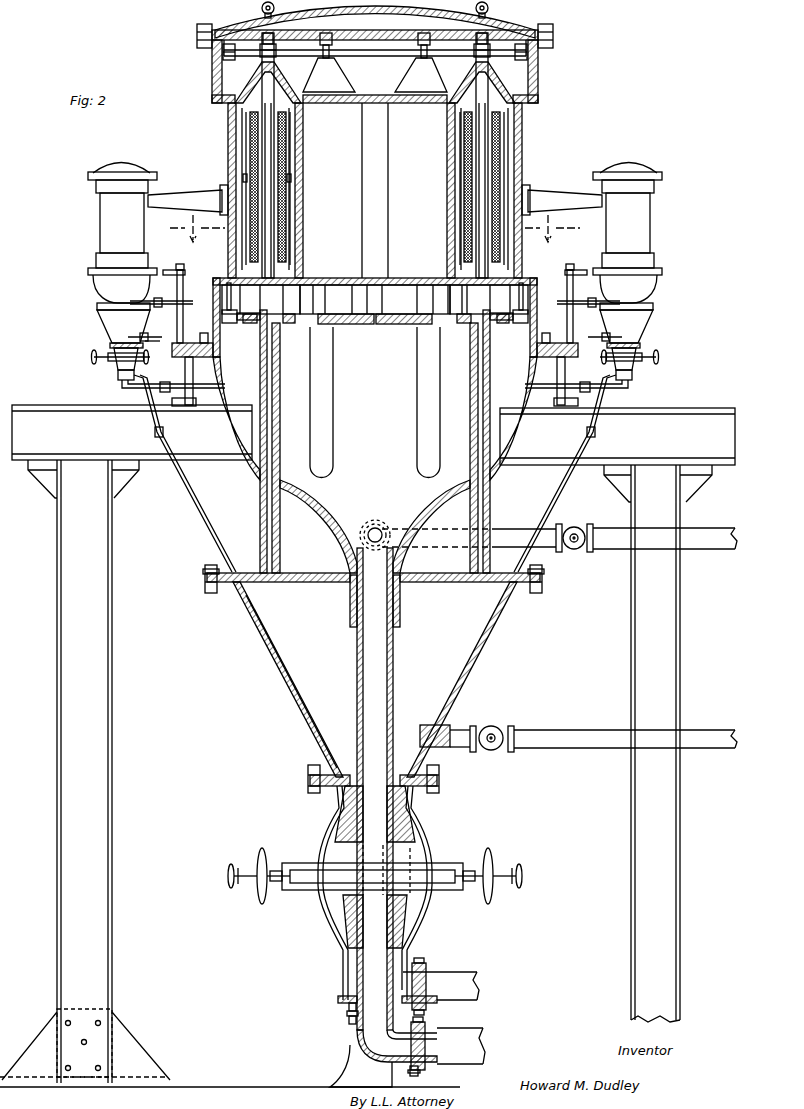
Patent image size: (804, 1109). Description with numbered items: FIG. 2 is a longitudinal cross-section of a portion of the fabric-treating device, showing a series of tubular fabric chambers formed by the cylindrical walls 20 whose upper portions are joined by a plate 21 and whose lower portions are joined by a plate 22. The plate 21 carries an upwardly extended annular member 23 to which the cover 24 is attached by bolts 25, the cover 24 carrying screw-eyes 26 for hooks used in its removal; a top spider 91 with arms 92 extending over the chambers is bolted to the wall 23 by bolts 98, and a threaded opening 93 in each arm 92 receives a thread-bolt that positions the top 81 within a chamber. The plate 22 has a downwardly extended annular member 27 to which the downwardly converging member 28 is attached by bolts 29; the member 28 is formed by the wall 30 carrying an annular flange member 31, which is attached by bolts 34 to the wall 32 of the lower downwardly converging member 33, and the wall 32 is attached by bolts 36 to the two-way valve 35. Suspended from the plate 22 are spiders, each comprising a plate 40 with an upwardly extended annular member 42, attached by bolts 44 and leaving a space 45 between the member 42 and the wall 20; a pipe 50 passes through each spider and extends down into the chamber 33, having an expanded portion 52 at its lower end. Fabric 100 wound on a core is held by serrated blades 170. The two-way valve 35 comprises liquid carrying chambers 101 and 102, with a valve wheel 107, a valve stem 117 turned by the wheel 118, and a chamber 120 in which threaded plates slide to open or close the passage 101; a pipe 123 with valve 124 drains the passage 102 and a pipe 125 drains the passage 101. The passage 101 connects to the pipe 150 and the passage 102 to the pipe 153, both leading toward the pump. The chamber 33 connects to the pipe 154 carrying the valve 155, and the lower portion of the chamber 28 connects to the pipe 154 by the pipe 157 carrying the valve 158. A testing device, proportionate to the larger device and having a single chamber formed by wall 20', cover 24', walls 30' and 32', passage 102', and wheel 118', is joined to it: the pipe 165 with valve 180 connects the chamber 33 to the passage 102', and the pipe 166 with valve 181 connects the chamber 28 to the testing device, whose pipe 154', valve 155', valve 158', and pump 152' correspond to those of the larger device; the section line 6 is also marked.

The cylindrical wall 20 is at (380, 155).
The cylindrical wall of testing device 20' is at (381, 227).
The plate 21 is at (372, 95).
The plate 22 is at (375, 278).
The annular member 23 is at (212, 78).
The cover 24 is at (375, 19).
The cover of testing device 24' is at (375, 157).
The bolt 25 is at (385, 26).
The screw-eye 26 is at (389, 9).
The annular member 27 is at (213, 300).
The downwardly converging member 28 is at (243, 412).
The bolt 29 is at (548, 332).
The wall 30 is at (377, 441).
The wall of testing device 30' is at (390, 292).
The annular flange member 31 is at (232, 573).
The wall 32 is at (377, 679).
The wall of testing device 32' is at (389, 329).
The downwardly converging member 33 is at (295, 684).
The bolt 34 is at (210, 594).
The two-way valve 35 is at (420, 825).
The bolt 36 is at (312, 793).
The plate 40 is at (285, 323).
The annular member 42 is at (233, 323).
The bolt 44 is at (320, 278).
The space 45 is at (242, 166).
The pipe 50 is at (272, 390).
The expanded portion 52 is at (290, 570).
The section line 6 is at (375, 237).
The top 81 is at (250, 85).
The top spider 91 is at (370, 50).
The arm 92 is at (375, 62).
The threaded opening 93 is at (276, 48).
The bolt 98 is at (229, 44).
The fabric 100 is at (283, 145).
The liquid carrying chamber 101 is at (370, 963).
The liquid carrying chamber 102 is at (394, 894).
The passage of testing device 102' is at (388, 355).
The valve wheel 107 is at (262, 848).
The valve stem 117 is at (246, 884).
The wheel 118 is at (372, 864).
The wheel of testing device 118' is at (376, 359).
The chamber 120 is at (383, 1068).
The pipe 123 is at (349, 1022).
The valve 124 is at (347, 1012).
The pipe 125 is at (420, 1074).
The pipe 150 is at (484, 1032).
The pump of testing device 152' is at (375, 282).
The pipe 153 is at (476, 972).
The pipe 154 is at (578, 727).
The pipe of testing device 154' is at (159, 327).
The valve 155 is at (496, 721).
The valve of testing device 155' is at (367, 327).
The pipe 157 is at (510, 529).
The valve 158 is at (574, 526).
The valve of testing device 158' is at (370, 298).
The pipe 165 is at (186, 490).
The pipe 166 is at (168, 384).
The serrated blade 170 is at (246, 130).
The valve 180 is at (155, 432).
The valve 181 is at (166, 393).